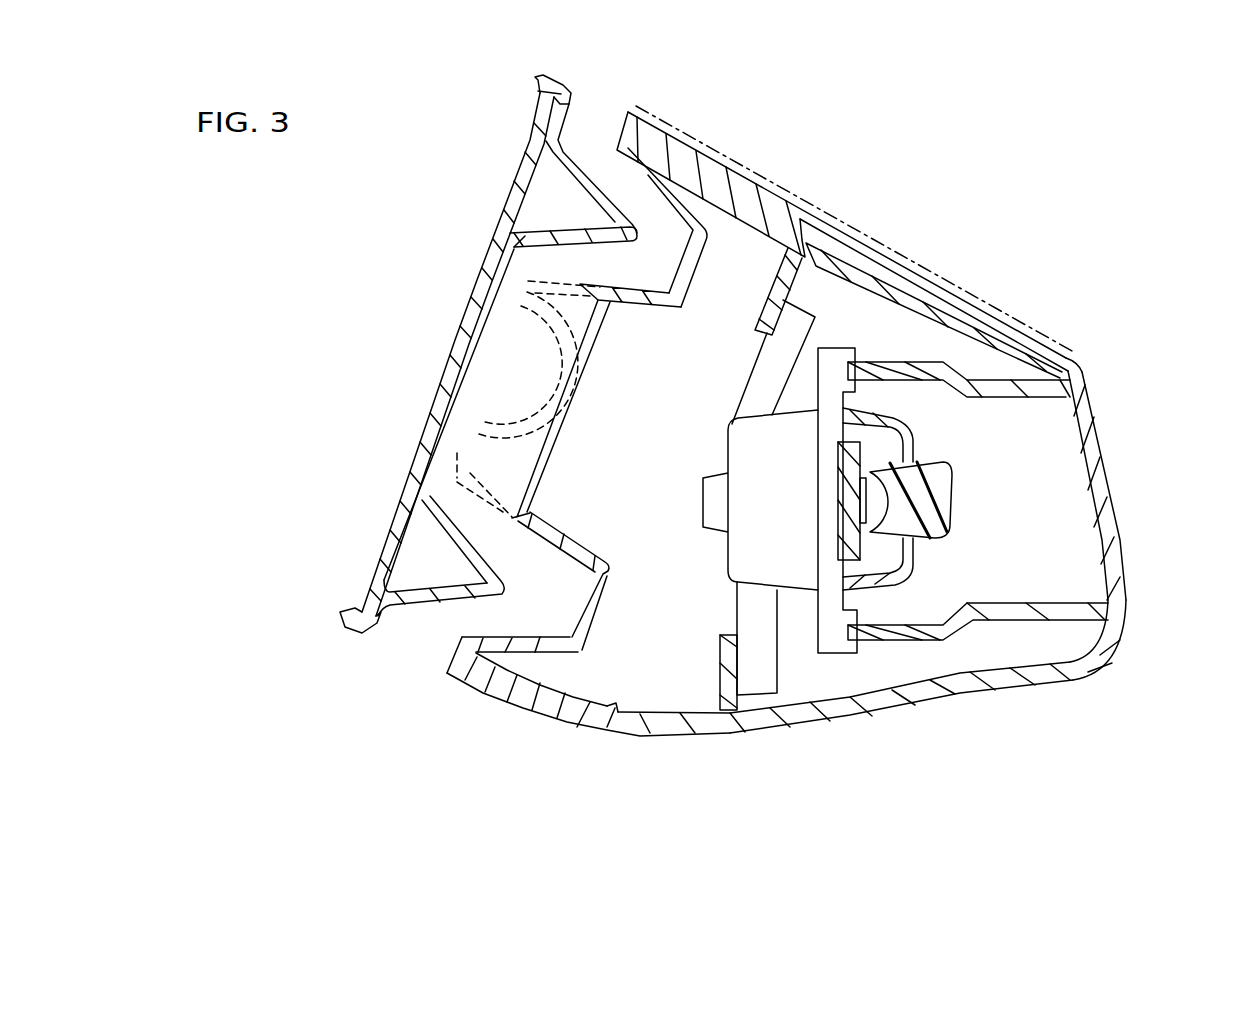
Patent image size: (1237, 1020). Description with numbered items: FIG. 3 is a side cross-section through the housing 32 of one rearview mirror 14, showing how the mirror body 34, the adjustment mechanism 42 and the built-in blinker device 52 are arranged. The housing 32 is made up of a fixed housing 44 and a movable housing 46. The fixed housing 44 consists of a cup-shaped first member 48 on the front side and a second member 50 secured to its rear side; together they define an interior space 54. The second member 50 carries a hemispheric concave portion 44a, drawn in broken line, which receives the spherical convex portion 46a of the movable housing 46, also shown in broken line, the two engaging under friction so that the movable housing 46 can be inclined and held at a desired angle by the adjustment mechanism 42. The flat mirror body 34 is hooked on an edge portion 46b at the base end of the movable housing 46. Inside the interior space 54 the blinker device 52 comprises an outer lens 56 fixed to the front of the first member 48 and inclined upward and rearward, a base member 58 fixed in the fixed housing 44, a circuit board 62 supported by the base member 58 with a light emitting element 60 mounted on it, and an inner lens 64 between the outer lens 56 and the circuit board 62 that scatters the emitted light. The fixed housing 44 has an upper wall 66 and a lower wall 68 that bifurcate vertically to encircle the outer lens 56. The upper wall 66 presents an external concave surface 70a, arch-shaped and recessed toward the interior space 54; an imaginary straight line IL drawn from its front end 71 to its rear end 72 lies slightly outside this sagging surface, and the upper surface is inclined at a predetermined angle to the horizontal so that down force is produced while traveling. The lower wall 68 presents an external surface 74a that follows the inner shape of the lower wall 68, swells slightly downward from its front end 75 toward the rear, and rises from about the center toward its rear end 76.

The rearview mirror 14 is at (322, 178).
The housing 32 is at (923, 234).
The mirror body 34 is at (503, 205).
The adjustment mechanism 42 is at (460, 501).
The fixed housing 44 is at (571, 561).
The concave portion 44a is at (540, 486).
The movable housing 46 is at (491, 336).
The convex portion 46a is at (445, 470).
The edge portion 46b is at (545, 92).
The first member 48 is at (633, 718).
The second member 50 is at (640, 780).
The blinker device 52 is at (905, 557).
The interior space 54 is at (700, 690).
The outer lens 56 is at (1098, 456).
The base member 58 is at (748, 548).
The light emitting element 60 is at (860, 501).
The circuit board 62 is at (848, 466).
The inner lens 64 is at (940, 464).
The upper wall 66 is at (884, 278).
The lower wall 68 is at (757, 712).
The concave surface 70a is at (790, 207).
The front end 71 is at (1083, 362).
The rear end 72 is at (826, 249).
The external surface 74a is at (874, 716).
The front end 75 is at (1106, 660).
The rear end 76 is at (448, 670).
The imaginary straight line IL is at (962, 292).